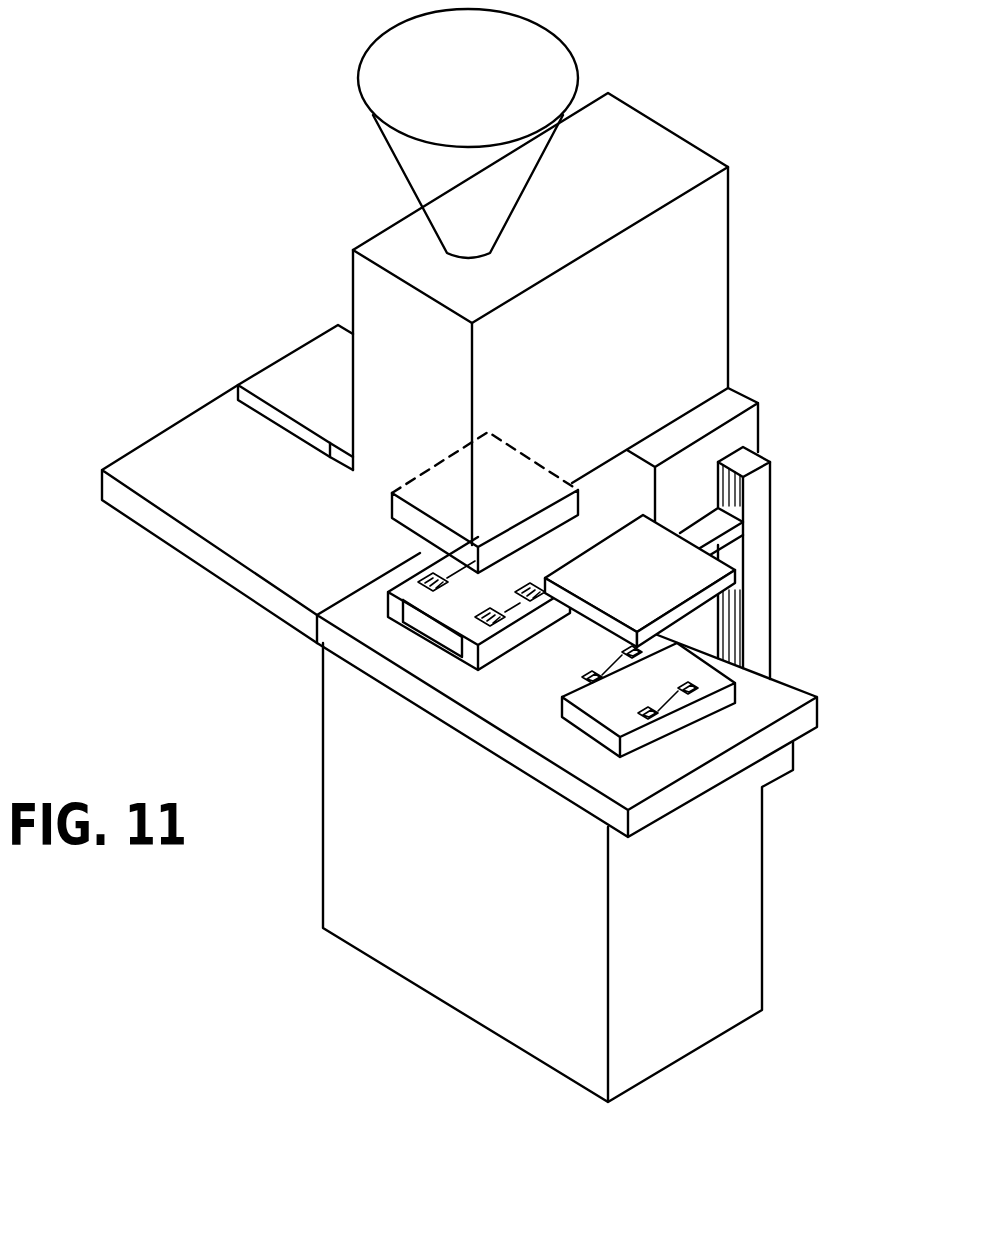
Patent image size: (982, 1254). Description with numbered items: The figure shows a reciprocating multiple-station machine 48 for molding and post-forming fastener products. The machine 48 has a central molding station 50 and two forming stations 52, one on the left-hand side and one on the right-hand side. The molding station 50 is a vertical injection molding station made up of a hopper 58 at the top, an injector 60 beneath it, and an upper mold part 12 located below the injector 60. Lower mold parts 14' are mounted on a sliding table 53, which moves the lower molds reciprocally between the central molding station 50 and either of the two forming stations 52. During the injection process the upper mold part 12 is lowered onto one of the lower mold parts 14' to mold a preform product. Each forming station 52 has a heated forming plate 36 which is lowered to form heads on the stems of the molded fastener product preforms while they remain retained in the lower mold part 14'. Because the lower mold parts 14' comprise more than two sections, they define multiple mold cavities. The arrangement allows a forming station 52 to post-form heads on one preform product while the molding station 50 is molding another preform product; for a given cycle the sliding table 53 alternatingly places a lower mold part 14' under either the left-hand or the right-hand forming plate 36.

The multiple-station machine 48 is at (207, 91).
The hopper 58 is at (482, 95).
The injector 60 is at (590, 372).
The upper mold part 12 is at (390, 502).
The sliding table 53 is at (347, 600).
The forming station 52 is at (200, 603).
The molding station 50 is at (387, 727).
The lower mold part 14' is at (625, 675).
The heated forming plate 36 is at (658, 587).